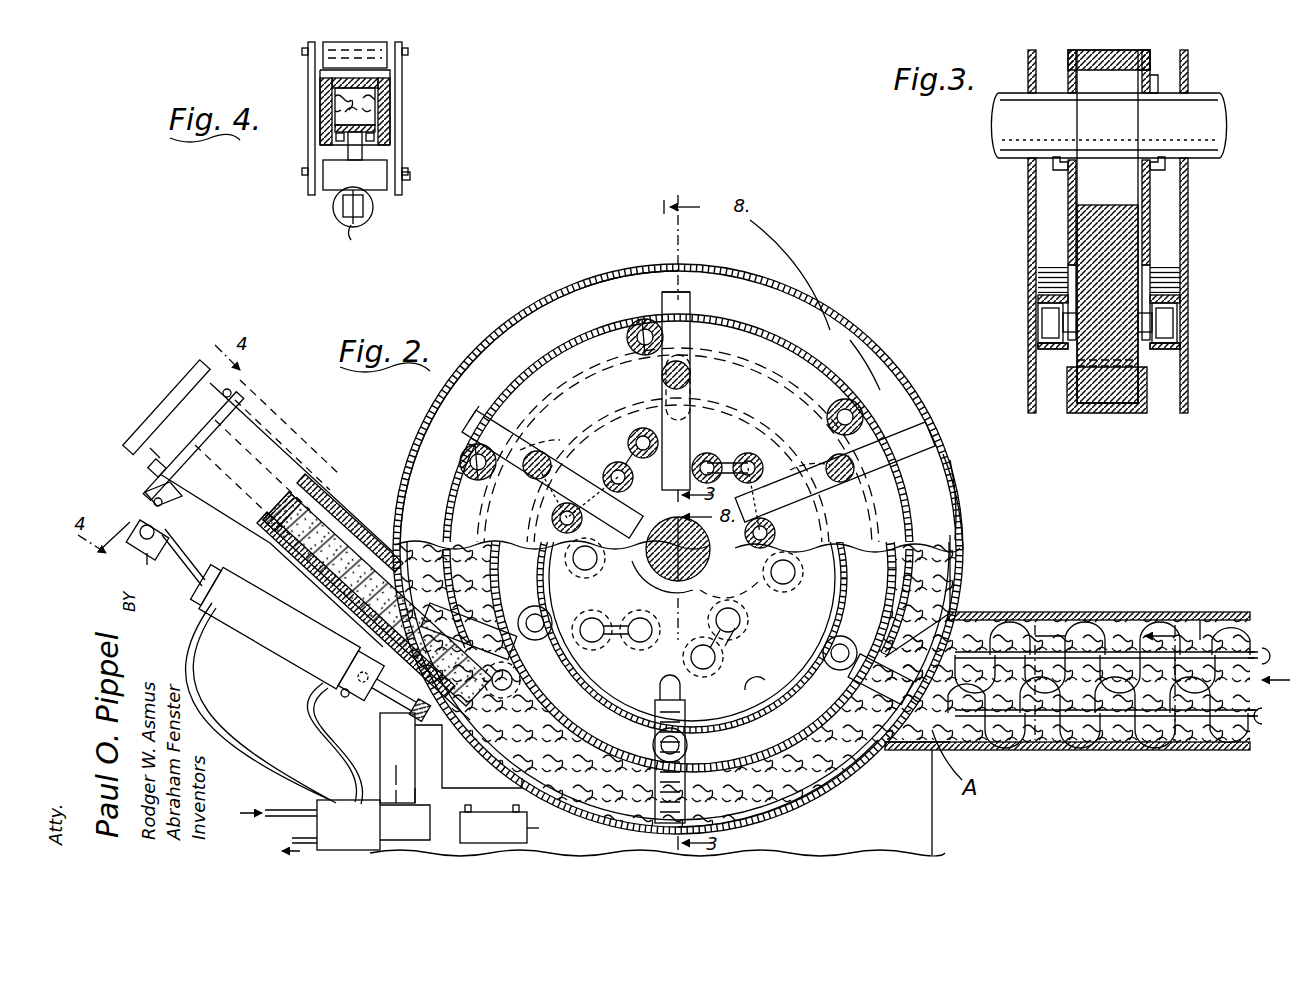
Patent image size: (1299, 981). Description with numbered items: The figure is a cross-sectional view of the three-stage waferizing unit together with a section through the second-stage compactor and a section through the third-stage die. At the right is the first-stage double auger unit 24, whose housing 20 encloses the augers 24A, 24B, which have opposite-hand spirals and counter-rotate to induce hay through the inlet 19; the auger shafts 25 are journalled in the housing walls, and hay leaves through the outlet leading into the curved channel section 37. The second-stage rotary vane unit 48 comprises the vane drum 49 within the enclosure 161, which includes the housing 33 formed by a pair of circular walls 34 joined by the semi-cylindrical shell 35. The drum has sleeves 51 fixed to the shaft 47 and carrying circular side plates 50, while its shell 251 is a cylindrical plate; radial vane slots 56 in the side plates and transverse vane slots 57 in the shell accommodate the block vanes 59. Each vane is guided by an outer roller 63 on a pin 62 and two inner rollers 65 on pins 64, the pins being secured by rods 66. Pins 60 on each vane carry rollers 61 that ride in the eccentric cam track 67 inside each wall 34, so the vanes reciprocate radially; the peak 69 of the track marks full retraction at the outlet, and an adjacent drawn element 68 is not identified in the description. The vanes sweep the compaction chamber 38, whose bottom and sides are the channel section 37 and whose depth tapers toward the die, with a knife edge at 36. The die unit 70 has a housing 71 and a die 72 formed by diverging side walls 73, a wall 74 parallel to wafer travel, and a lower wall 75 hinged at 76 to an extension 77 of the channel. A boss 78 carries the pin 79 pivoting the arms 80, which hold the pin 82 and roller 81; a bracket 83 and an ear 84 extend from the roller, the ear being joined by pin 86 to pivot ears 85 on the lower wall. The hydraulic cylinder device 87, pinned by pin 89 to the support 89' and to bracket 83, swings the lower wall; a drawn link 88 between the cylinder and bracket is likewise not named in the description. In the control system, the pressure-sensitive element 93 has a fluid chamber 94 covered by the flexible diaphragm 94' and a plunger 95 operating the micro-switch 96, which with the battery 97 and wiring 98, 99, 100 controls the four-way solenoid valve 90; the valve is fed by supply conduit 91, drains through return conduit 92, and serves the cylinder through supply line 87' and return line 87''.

In FIG. 2, the inlet 19 is at (1200, 608).
In FIG. 2, the housing 20 is at (1090, 612).
In FIG. 2, the double auger unit 24 is at (1143, 612).
In FIG. 2, the auger 24A is at (1013, 623).
In FIG. 2, the auger 24B is at (1005, 735).
In FIG. 2, the auger shafts 25 is at (1257, 648).
In FIG. 2, the housing 33 is at (838, 323).
In FIG. 3, the housing 33 is at (1026, 252).
In FIG. 2, the circular walls 34 is at (957, 512).
In FIG. 3, the circular walls 34 is at (1038, 298).
In FIG. 2, the semi-cylindrical shell 35 is at (562, 300).
In FIG. 2, the knife edge 36 is at (882, 758).
In FIG. 2, the channel section 37 is at (820, 798).
In FIG. 3, the channel section 37 is at (1148, 395).
In FIG. 2, the compaction chamber 38 is at (780, 806).
In FIG. 3, the compaction chamber 38 is at (1135, 380).
In FIG. 2, the shaft 47 is at (678, 580).
In FIG. 3, the shaft 47 is at (1220, 115).
In FIG. 2, the rotary vane unit 48 is at (787, 318).
In FIG. 3, the rotary vane unit 48 is at (1168, 86).
In FIG. 2, the vane drum 49 is at (740, 304).
In FIG. 3, the vane drum 49 is at (1155, 71).
In FIG. 2, the circular side plates 50 is at (540, 393).
In FIG. 3, the circular side plates 50 is at (1068, 200).
In FIG. 2, the sleeves 51 is at (655, 583).
In FIG. 3, the sleeves 51 is at (1055, 166).
In FIG. 2, the radial vane slots 56 is at (692, 355).
In FIG. 3, the radial vane slots 56 is at (1048, 270).
In FIG. 2, the transverse vane slots 57 is at (692, 297).
In FIG. 2, the vanes 59 is at (680, 296).
In FIG. 3, the vanes 59 is at (1117, 67).
In FIG. 2, the pins 60 is at (690, 382).
In FIG. 3, the pins 60 is at (1150, 322).
In FIG. 2, the rollers 61 is at (660, 382).
In FIG. 3, the rollers 61 is at (1040, 345).
In FIG. 2, the pin 62 is at (645, 327).
In FIG. 2, the outer roller 63 is at (620, 338).
In FIG. 2, the pins 64 is at (630, 461).
In FIG. 2, the inner rollers 65 is at (635, 473).
In FIG. 2, the rods 66 is at (717, 616).
In FIG. 2, the cam track 67 is at (875, 563).
In FIG. 3, the cam track 67 is at (1175, 343).
In FIG. 2, the inner wall ring 68 is at (895, 578).
In FIG. 2, the peak 69 is at (553, 624).
In FIG. 2, the die unit 70 is at (315, 475).
In FIG. 4, the die unit 70 is at (410, 115).
In FIG. 2, the housing 71 is at (338, 490).
In FIG. 4, the housing 71 is at (320, 68).
In FIG. 2, the die 72 is at (357, 528).
In FIG. 4, the die 72 is at (320, 92).
In FIG. 4, the side walls 73 is at (390, 85).
In FIG. 2, the wall 74 is at (370, 507).
In FIG. 4, the wall 74 is at (375, 98).
In FIG. 2, the lower wall 75 is at (285, 525).
In FIG. 4, the lower wall 75 is at (375, 128).
In FIG. 2, the hinge 76 is at (381, 687).
In FIG. 2, the extension 77 is at (410, 707).
In FIG. 2, the boss 78 is at (205, 384).
In FIG. 4, the boss 78 is at (390, 48).
In FIG. 2, the pin 79 is at (231, 393).
In FIG. 4, the pin 79 is at (302, 53).
In FIG. 2, the arms 80 is at (190, 425).
In FIG. 4, the arms 80 is at (403, 176).
In FIG. 2, the roller 81 is at (168, 507).
In FIG. 4, the roller 81 is at (383, 192).
In FIG. 2, the pin 82 is at (150, 468).
In FIG. 4, the pin 82 is at (410, 180).
In FIG. 2, the bracket 83 is at (140, 540).
In FIG. 4, the bracket 83 is at (342, 214).
In FIG. 2, the ear 84 is at (150, 450).
In FIG. 4, the ear 84 is at (347, 153).
In FIG. 4, the pivot ears 85 is at (374, 138).
In FIG. 4, the pin 86 is at (362, 146).
In FIG. 2, the hydraulic cylinder device 87 is at (275, 625).
In FIG. 2, the supply line 87' is at (261, 703).
In FIG. 2, the return line 87'' is at (318, 743).
In FIG. 2, the piston rod 88 is at (185, 567).
In FIG. 2, the pin 89 is at (328, 681).
In FIG. 2, the support 89' is at (345, 700).
In FIG. 2, the four-way solenoid valve 90 is at (317, 808).
In FIG. 2, the supply conduit 91 is at (262, 814).
In FIG. 2, the return conduit 92 is at (290, 836).
In FIG. 2, the pressure sensitive fluid element 93 is at (468, 756).
In FIG. 2, the fluid chamber 94 is at (469, 631).
In FIG. 2, the flexible diaphragm 94' is at (438, 640).
In FIG. 2, the plunger 95 is at (397, 758).
In FIG. 2, the micro-switch 96 is at (390, 735).
In FIG. 2, the battery 97 is at (546, 826).
In FIG. 2, the electrical wiring 98 is at (415, 825).
In FIG. 2, the electrical wiring 99 is at (490, 788).
In FIG. 2, the electrical wiring 100 is at (403, 774).
In FIG. 2, the enclosure 161 is at (965, 456).
In FIG. 2, the shell 251 is at (860, 374).